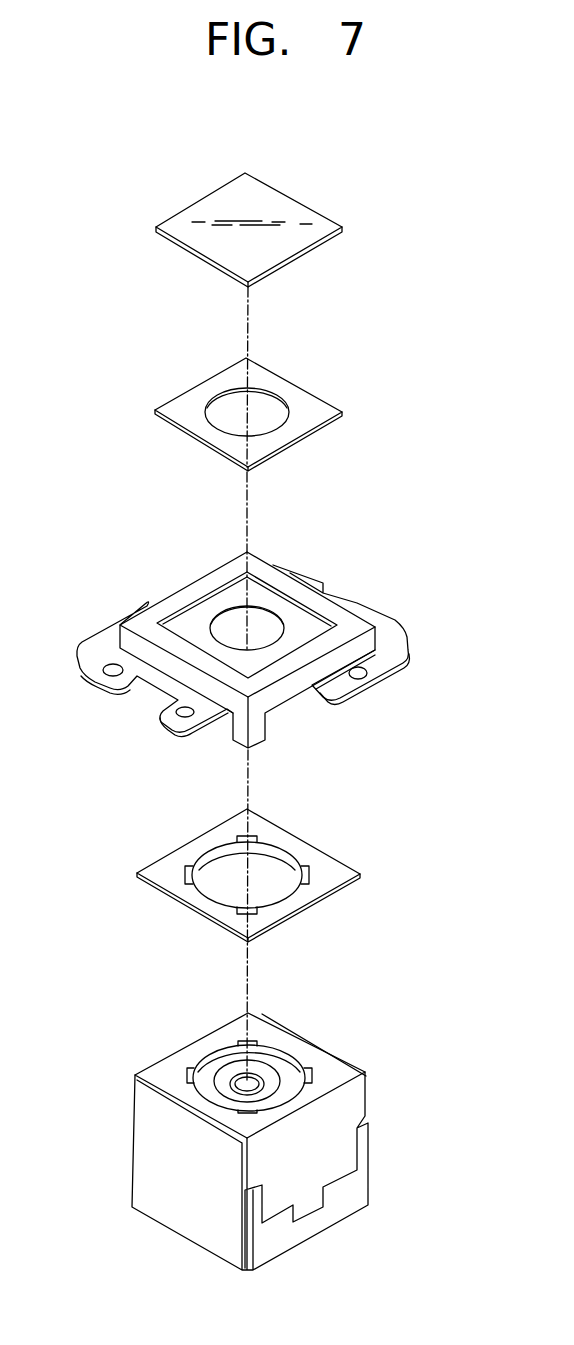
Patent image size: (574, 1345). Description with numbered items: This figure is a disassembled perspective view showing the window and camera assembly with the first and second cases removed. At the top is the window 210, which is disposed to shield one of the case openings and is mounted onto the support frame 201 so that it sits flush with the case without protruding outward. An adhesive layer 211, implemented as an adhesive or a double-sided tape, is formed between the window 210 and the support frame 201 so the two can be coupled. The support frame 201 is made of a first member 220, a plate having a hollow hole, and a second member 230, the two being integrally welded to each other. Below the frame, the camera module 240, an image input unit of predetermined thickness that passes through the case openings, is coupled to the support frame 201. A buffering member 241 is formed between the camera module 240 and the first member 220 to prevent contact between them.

The support frame 201 is at (414, 551).
The window 210 is at (210, 245).
The adhesive layer 211 is at (200, 428).
The first member 220 is at (265, 597).
The second member 230 is at (327, 602).
The camera module 240 is at (140, 1160).
The buffering member 241 is at (202, 902).